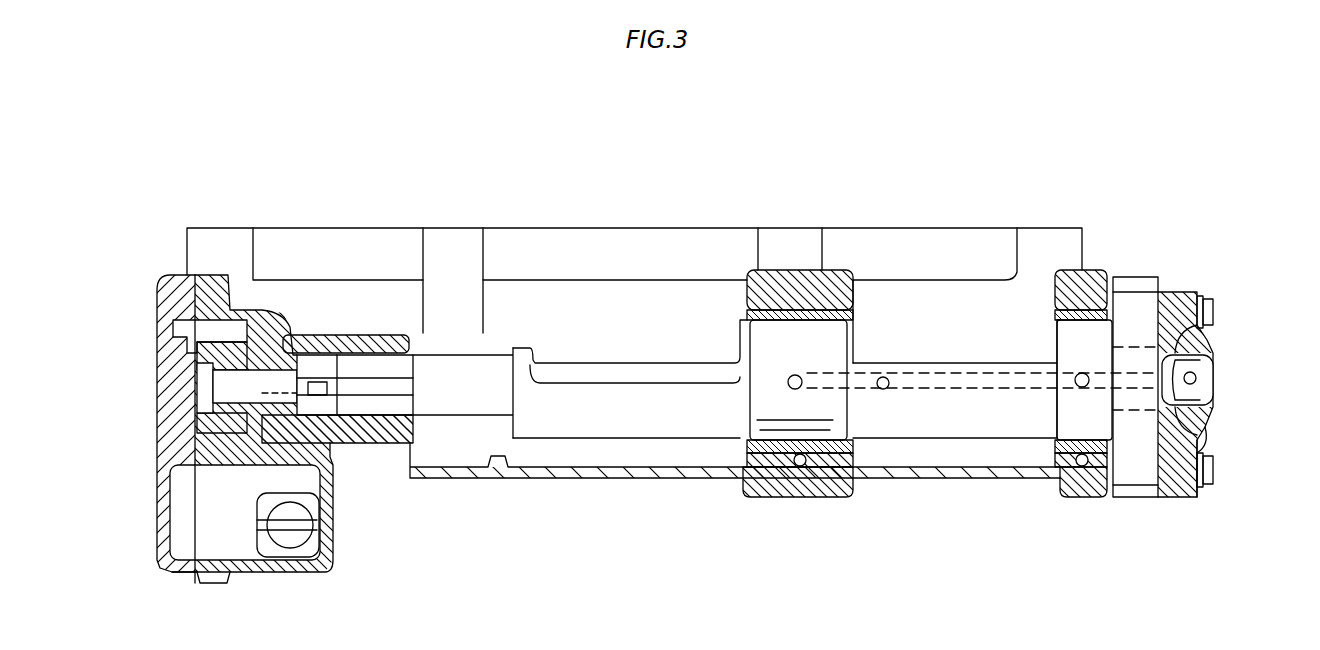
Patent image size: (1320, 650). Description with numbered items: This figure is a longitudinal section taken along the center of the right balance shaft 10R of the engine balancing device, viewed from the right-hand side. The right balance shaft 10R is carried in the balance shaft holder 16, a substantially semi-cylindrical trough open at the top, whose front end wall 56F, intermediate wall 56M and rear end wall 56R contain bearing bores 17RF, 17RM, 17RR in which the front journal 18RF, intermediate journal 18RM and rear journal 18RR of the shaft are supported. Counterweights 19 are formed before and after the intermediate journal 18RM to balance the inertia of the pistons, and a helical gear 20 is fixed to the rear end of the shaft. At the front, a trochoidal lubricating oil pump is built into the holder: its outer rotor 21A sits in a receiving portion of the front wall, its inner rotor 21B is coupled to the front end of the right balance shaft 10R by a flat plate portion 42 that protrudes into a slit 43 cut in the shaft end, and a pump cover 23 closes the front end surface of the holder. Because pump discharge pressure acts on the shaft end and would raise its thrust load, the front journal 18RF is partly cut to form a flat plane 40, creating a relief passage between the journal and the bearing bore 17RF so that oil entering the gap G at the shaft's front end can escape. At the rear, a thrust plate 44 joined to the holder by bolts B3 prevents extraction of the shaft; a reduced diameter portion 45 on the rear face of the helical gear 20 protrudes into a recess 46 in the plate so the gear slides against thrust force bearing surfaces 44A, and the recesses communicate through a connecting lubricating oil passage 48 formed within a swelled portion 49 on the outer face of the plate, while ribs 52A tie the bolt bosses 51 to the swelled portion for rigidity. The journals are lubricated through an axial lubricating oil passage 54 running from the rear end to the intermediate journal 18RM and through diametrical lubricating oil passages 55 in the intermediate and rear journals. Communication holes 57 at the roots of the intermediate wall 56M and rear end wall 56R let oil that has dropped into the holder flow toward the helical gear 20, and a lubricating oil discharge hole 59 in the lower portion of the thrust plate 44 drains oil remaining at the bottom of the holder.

The right balance shaft 10R is at (633, 363).
The balance shaft holder 16 is at (538, 466).
The front bearing bore 17RF is at (413, 367).
The intermediate bearing bore 17RM is at (776, 290).
The rear bearing bore 17RR is at (1058, 330).
The front journal 18RF is at (387, 407).
The intermediate journal 18RM is at (768, 463).
The rear journal 18RR is at (1057, 473).
The counterweight 19 is at (626, 428).
The helical gear 20 is at (1127, 280).
The outer rotor 21A is at (175, 342).
The inner rotor 21B is at (173, 417).
The pump cover 23 is at (157, 572).
The flat plane 40 is at (350, 378).
The flat plate portion 42 is at (343, 443).
The slit 43 is at (297, 380).
The thrust plate 44 is at (1178, 297).
The thrust force bearing surface 44A is at (1137, 475).
The reduced diameter portion 45 is at (1207, 450).
The recess 46 is at (1200, 392).
The connecting lubricating oil passage 48 is at (1197, 380).
The swelled portion 49 is at (1213, 367).
The boss 51 is at (1190, 292).
The rib 52A is at (1200, 332).
The axial lubricating oil passage 54 is at (886, 390).
The diametrical lubricating oil passage 55 is at (1058, 373).
The front end wall 56F is at (428, 320).
The intermediate wall 56M is at (840, 283).
The rear end wall 56R is at (1073, 275).
The communication hole 57 is at (798, 463).
The lubricating oil discharge hole 59 is at (1167, 473).
The bolt B3 is at (1215, 292).
The gap G is at (260, 468).